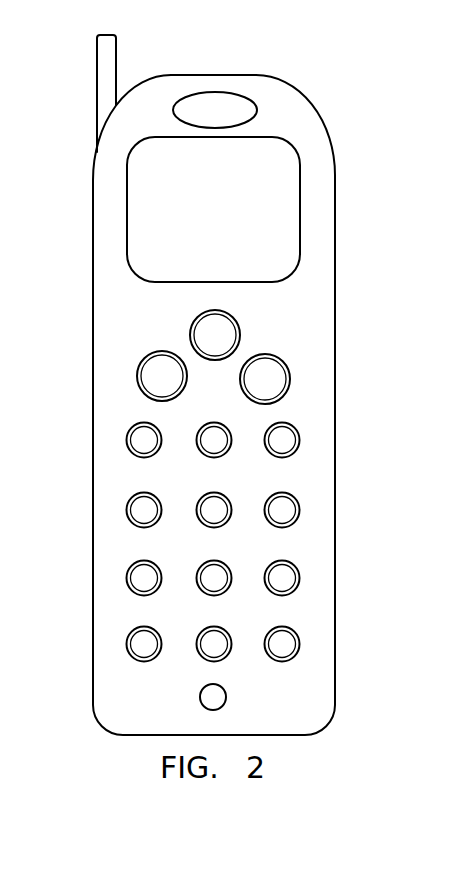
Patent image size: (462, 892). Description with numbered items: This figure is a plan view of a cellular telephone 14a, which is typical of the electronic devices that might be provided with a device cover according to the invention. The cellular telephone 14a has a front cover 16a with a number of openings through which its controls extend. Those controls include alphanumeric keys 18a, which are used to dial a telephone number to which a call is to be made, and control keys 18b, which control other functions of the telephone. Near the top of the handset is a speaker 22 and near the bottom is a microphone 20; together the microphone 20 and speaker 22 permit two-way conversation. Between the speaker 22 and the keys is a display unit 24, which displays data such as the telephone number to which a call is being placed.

The cellular telephone 14a is at (81, 289).
The speaker 22 is at (213, 109).
The display unit 24 is at (248, 242).
The control keys 18b is at (213, 336).
The front cover 16a is at (216, 532).
The alphanumeric keys 18a is at (213, 441).
The microphone 20 is at (211, 697).